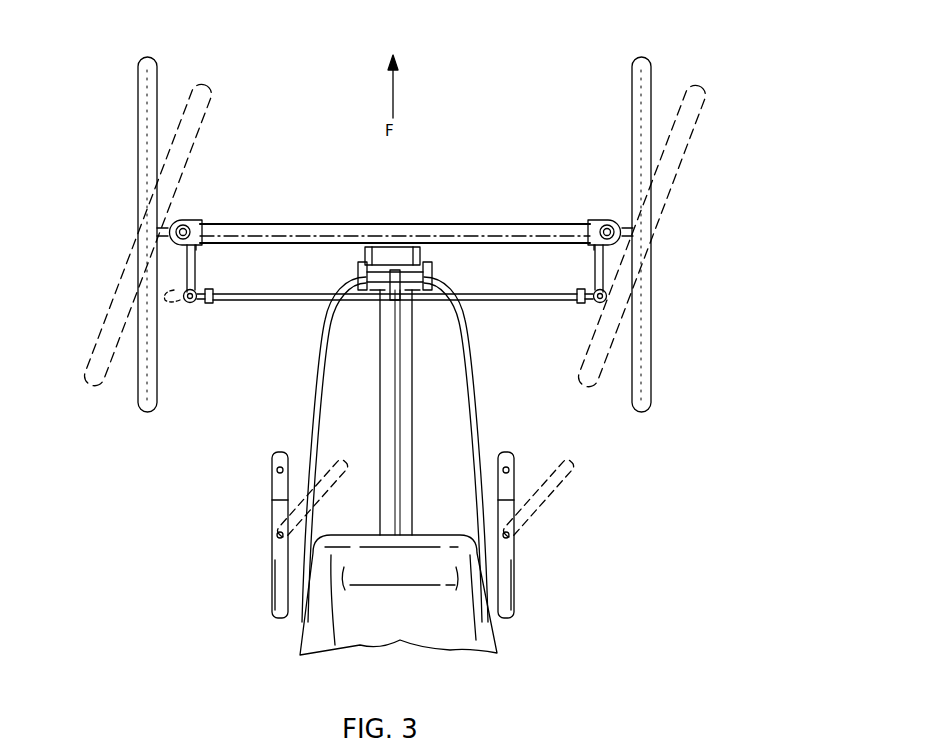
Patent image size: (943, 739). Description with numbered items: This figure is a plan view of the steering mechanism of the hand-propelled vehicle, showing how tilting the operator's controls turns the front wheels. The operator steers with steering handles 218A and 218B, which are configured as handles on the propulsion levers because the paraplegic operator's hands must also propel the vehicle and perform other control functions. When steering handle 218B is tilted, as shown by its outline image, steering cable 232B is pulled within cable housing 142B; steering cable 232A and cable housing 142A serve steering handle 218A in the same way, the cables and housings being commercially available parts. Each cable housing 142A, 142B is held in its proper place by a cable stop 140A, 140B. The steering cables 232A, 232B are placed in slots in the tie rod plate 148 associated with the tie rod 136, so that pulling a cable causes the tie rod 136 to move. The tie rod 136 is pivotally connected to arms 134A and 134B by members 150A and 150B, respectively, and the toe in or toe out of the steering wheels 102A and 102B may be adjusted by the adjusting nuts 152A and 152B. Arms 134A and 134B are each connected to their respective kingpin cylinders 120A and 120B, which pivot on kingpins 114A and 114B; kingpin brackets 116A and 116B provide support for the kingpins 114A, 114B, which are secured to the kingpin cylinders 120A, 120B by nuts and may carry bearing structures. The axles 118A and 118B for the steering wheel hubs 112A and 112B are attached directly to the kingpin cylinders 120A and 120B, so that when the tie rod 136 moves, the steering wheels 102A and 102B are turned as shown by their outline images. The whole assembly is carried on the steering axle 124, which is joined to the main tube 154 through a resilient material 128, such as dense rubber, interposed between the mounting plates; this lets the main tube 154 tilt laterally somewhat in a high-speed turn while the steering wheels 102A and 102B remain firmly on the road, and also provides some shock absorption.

The steering wheel 102A is at (638, 55).
The steering wheel 102B is at (150, 55).
The steering wheel hub 112A is at (650, 232).
The steering wheel hub 112B is at (140, 232).
The kingpin 114A is at (592, 221).
The kingpin 114B is at (200, 221).
The kingpin bracket 116A is at (587, 247).
The kingpin bracket 116B is at (203, 247).
The axle 118A is at (620, 225).
The axle 118B is at (160, 230).
The kingpin cylinder 120A is at (610, 224).
The kingpin cylinder 120B is at (178, 226).
The steering axle 124 is at (320, 235).
The resilient material 128 is at (422, 256).
The arm 134A is at (597, 272).
The arm 134B is at (193, 270).
The tie rod 136 is at (307, 303).
The cable stop 140A is at (434, 273).
The cable stop 140B is at (356, 272).
The cable housing 142A is at (490, 390).
The cable housing 142B is at (310, 386).
The tie rod plate 148 is at (392, 300).
The member 150A is at (597, 303).
The member 150B is at (193, 303).
The adjusting nut 152A is at (582, 303).
The adjusting nut 152B is at (210, 303).
The main tube 154 is at (398, 432).
The steering handle 218A is at (515, 480).
The steering handle 218B is at (272, 480).
The steering cable 232A is at (439, 325).
The steering cable 232B is at (357, 325).